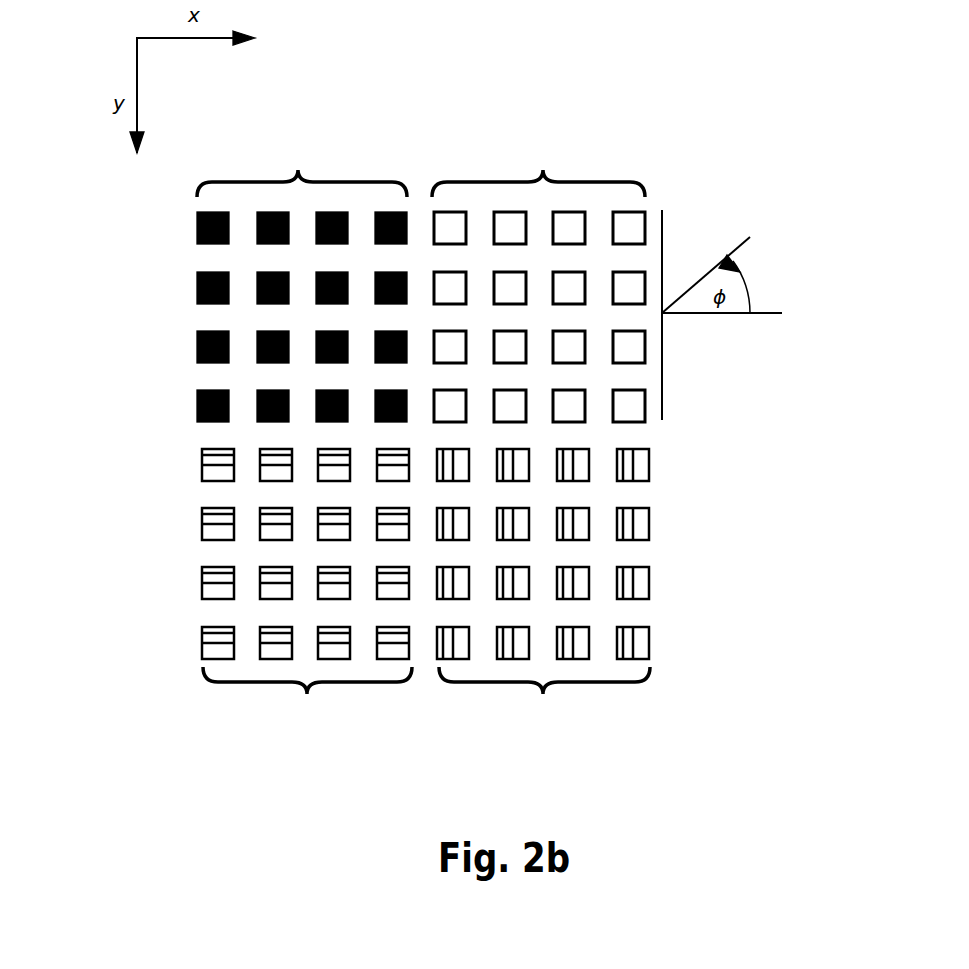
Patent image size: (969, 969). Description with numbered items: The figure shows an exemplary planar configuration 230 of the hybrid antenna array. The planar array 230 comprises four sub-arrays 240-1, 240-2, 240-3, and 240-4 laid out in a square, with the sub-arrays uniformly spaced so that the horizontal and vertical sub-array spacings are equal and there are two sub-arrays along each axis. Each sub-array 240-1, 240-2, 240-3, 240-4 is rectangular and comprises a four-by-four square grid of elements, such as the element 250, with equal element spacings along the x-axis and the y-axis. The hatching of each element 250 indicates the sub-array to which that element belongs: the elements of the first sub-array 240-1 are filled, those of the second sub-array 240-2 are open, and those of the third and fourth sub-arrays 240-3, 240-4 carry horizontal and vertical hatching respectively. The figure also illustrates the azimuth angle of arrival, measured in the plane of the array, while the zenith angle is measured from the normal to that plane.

The planar configuration 230 is at (155, 309).
The sub-array 240-1 is at (298, 168).
The sub-array 240-2 is at (543, 170).
The sub-array 240-3 is at (307, 692).
The sub-array 240-4 is at (543, 692).
The element 250 is at (649, 520).